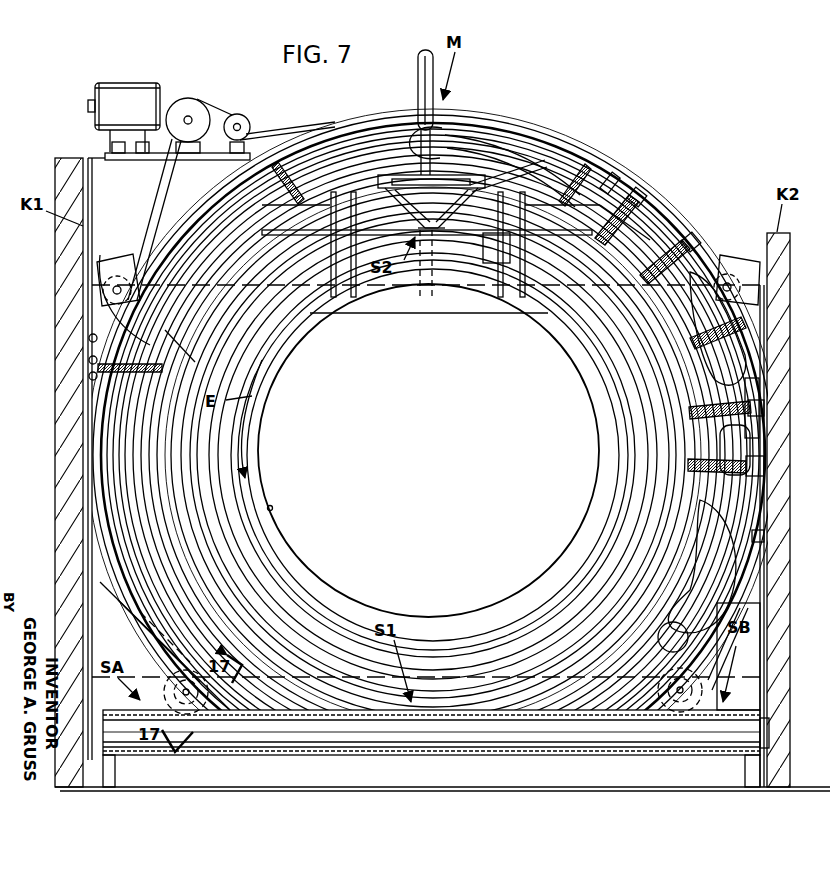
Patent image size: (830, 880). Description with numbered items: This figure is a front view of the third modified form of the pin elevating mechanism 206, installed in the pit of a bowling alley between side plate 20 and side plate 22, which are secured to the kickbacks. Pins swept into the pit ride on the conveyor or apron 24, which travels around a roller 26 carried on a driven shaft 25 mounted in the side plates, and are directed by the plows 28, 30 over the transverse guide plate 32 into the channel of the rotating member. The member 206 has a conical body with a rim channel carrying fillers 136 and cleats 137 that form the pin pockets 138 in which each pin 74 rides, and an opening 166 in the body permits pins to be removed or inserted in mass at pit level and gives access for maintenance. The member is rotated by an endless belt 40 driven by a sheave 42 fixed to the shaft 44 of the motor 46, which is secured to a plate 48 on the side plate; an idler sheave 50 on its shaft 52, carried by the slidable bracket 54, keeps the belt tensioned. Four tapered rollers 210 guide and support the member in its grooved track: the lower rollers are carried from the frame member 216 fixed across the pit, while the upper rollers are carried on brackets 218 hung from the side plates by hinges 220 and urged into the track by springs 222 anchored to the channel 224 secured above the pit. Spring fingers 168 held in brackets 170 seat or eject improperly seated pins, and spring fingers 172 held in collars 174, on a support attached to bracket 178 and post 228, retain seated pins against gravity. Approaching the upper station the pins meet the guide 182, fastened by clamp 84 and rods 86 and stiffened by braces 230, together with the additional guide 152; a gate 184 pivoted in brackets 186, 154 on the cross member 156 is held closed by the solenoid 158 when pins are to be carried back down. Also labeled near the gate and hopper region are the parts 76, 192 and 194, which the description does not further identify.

The side plate 20 is at (92, 236).
The side plate 22 is at (768, 372).
The conveyor or apron 24 is at (464, 752).
The shaft 25 is at (760, 731).
The roller 26 is at (420, 730).
The directing member or plow 28 is at (226, 710).
The directing member or plow 30 is at (746, 608).
The transverse guide plate 32 is at (588, 770).
The endless belt 40 is at (283, 128).
The sheave 42 is at (212, 111).
The shaft 44 is at (193, 117).
The motor 46 is at (200, 88).
The plate 48 is at (118, 162).
The idler sheave 50 is at (250, 117).
The idler shaft 52 is at (243, 127).
The bracket 54 is at (238, 138).
The pin 74 is at (445, 135).
The hopper outlet 76 is at (447, 222).
The clamp 84 is at (89, 374).
The rod 86 is at (337, 260).
The filler 136 is at (355, 150).
The cleat 137 is at (565, 140).
The pin pocket 138 is at (225, 215).
The additional guide 152 is at (222, 240).
The bracket 154 is at (343, 234).
The cross member 156 is at (540, 232).
The solenoid 158 is at (483, 256).
The opening 166 is at (267, 508).
The spring finger 168 is at (738, 462).
The bracket 170 is at (766, 461).
The spring finger 172 is at (645, 212).
The collar 174 is at (630, 200).
The bracket 178 is at (760, 399).
The guide 182 is at (95, 367).
The gate 184 is at (410, 175).
The bracket 186 is at (536, 162).
The stop 192 is at (600, 182).
The link 194 is at (490, 180).
The pin elevating mechanism 206 is at (543, 128).
The roller 210 is at (733, 268).
The frame member 216 is at (463, 675).
The bracket 218 is at (122, 262).
The hinge 220 is at (89, 338).
The spring 222 is at (150, 262).
The channel 224 is at (402, 313).
The post 228 is at (416, 78).
The brace 230 is at (250, 172).